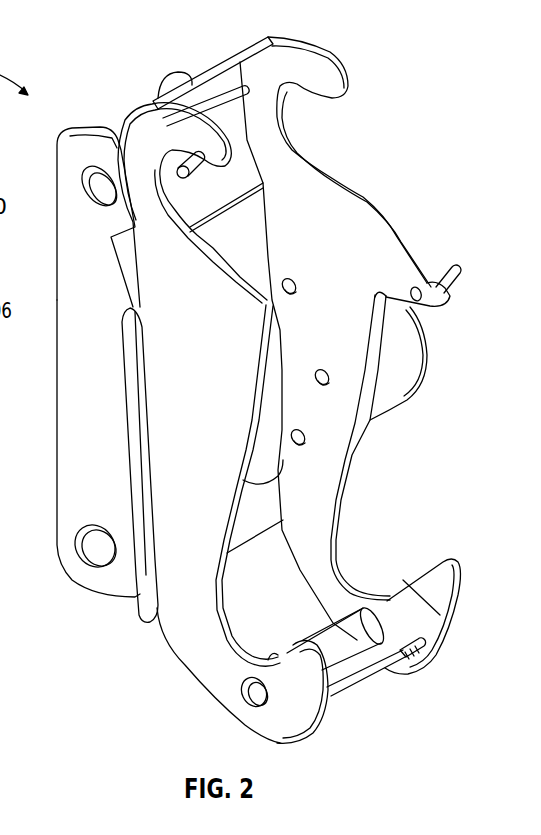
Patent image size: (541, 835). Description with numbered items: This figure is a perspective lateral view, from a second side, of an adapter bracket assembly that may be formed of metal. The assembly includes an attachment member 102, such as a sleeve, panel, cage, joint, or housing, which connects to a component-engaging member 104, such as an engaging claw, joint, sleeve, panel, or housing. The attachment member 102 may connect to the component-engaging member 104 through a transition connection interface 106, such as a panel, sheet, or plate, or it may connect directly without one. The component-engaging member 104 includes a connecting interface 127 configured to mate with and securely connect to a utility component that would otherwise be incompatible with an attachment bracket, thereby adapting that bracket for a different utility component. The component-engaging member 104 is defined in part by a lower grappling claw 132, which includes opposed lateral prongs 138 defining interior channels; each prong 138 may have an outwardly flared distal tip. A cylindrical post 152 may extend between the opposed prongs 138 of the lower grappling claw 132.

The attachment member 102 is at (73, 370).
The component-engaging member 104 is at (417, 235).
The transition connection interface 106 is at (133, 437).
The connecting interface 127 is at (337, 231).
The lower grappling claw 132 is at (302, 748).
The lateral prongs 138 is at (280, 720).
The cylindrical post 152 is at (352, 632).